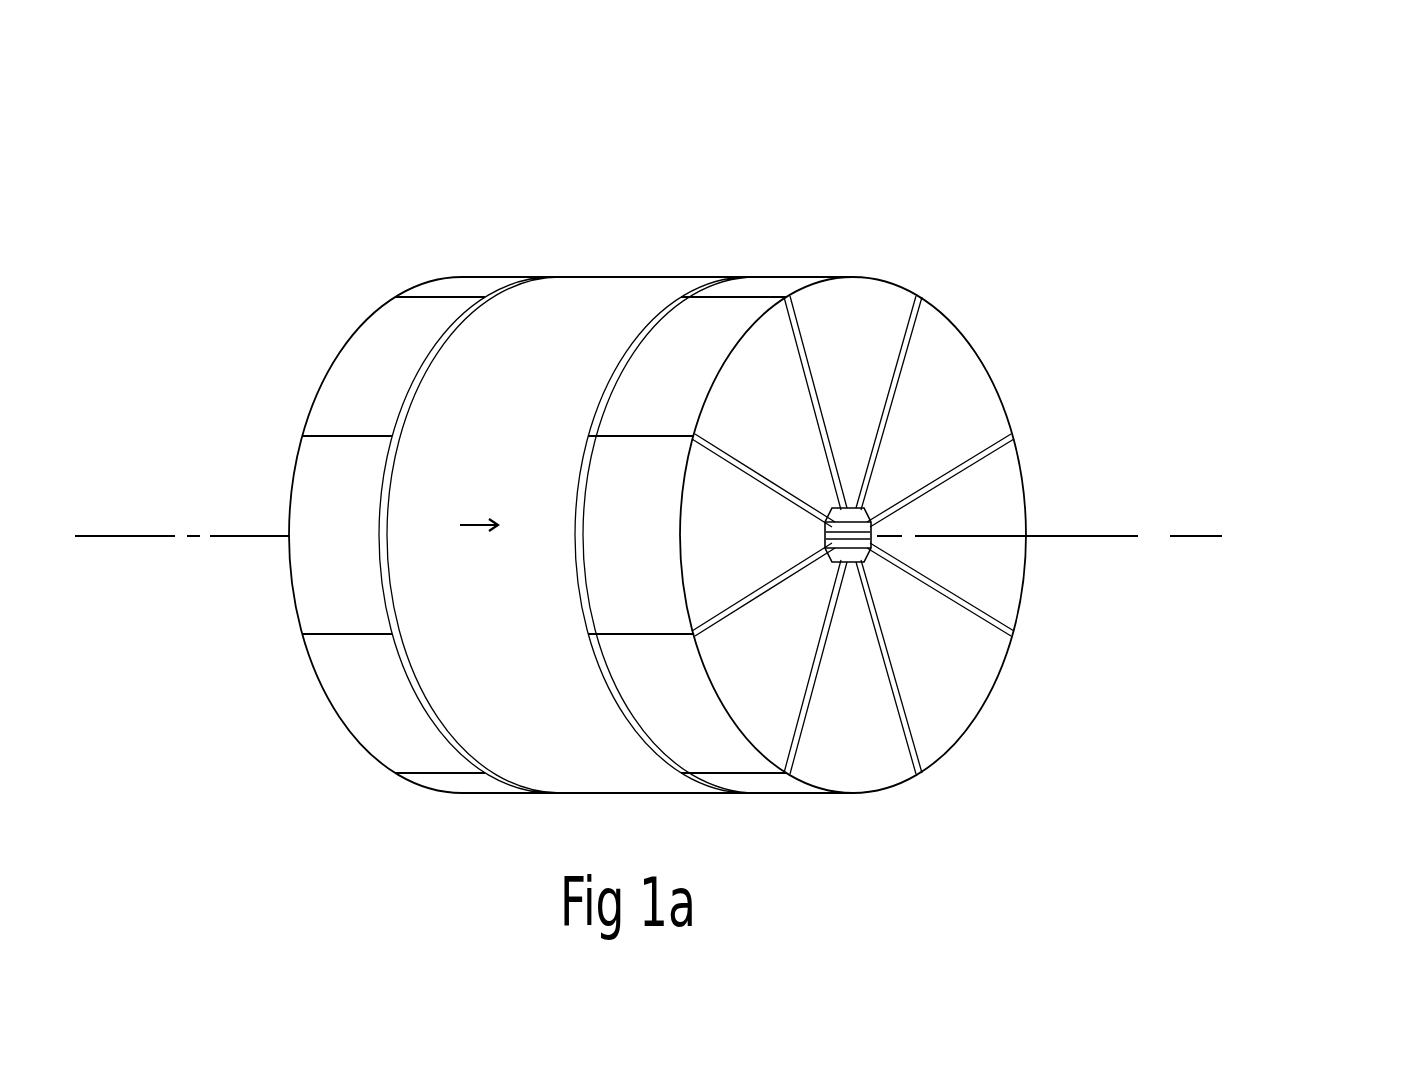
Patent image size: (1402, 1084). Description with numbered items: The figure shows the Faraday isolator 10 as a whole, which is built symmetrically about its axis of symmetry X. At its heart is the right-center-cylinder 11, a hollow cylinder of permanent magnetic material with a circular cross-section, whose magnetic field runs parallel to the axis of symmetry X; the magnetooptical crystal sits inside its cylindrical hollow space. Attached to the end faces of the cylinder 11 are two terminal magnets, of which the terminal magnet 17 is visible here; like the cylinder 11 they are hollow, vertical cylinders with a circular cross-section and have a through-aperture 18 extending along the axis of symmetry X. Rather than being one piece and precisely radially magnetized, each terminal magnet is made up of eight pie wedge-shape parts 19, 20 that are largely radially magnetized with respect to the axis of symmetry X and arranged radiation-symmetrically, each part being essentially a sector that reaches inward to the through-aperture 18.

The Faraday isolator 10 is at (615, 208).
The right-center-cylinder 11 is at (617, 275).
The terminal magnet 17 is at (375, 352).
The through-aperture 18 is at (868, 557).
The pie wedge-shape part 19 is at (857, 358).
The pie wedge-shape part 20 is at (300, 634).
The axis of symmetry X is at (1150, 538).